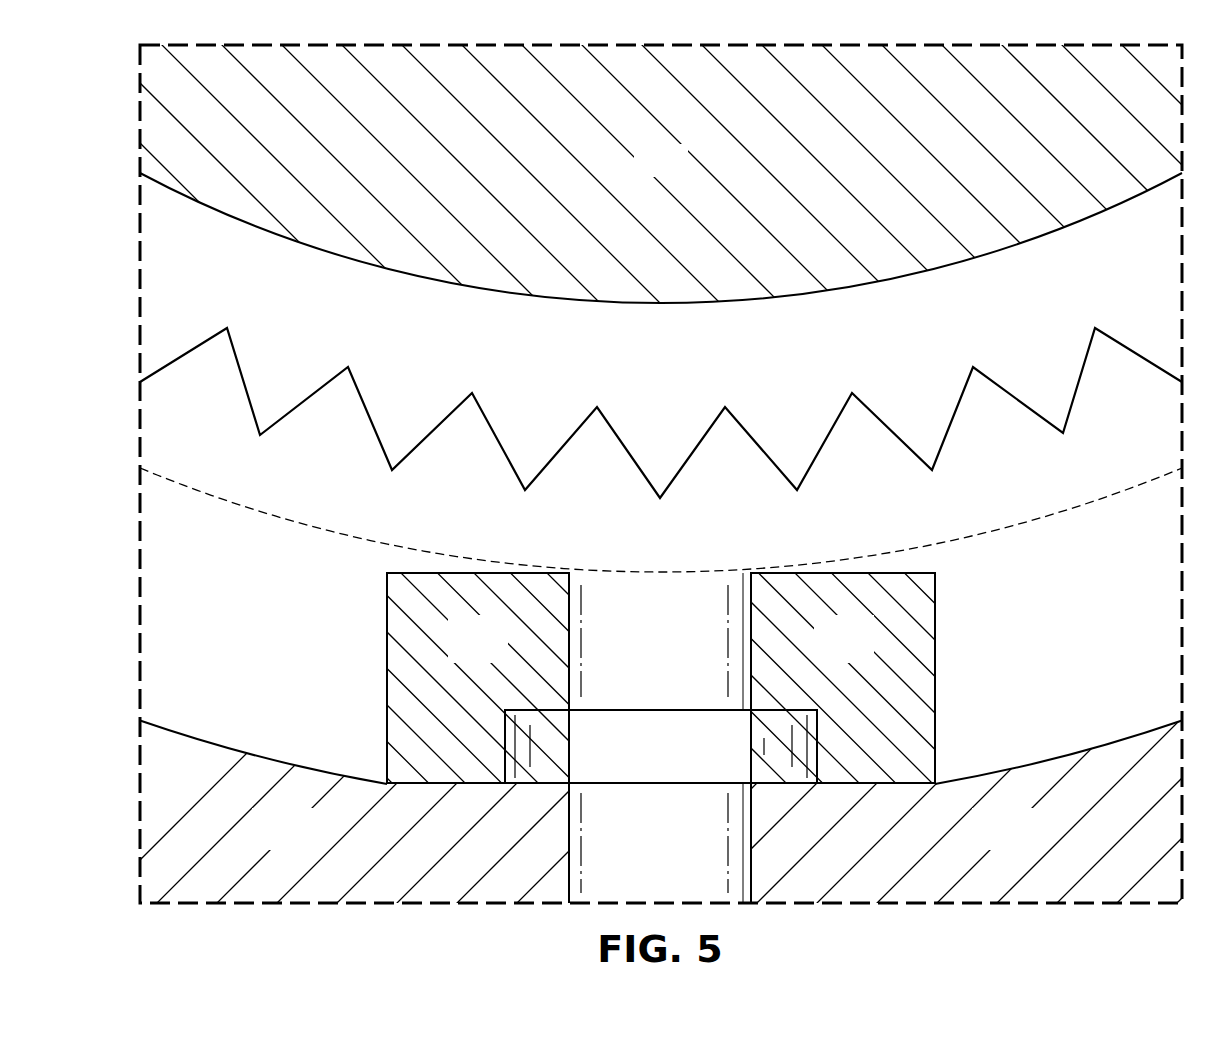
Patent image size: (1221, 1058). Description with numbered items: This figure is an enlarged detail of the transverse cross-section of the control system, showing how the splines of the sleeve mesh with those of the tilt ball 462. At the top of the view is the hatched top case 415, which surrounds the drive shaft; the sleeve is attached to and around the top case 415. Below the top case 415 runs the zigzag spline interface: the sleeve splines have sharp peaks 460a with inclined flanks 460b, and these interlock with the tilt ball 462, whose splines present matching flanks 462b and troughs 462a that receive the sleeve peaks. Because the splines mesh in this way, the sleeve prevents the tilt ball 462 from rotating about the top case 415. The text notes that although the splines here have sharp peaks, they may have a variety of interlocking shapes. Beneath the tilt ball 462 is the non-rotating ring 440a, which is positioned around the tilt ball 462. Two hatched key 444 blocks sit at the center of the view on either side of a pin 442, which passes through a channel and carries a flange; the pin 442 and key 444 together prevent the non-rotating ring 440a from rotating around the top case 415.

The top case 415 is at (639, 174).
The non-rotating ring 440a is at (1038, 844).
The pin 442 is at (640, 658).
The key 444 is at (865, 654).
The sleeve spline peak 460a is at (225, 320).
The sleeve spline flank 460b is at (263, 411).
The tilt ball 462 is at (1075, 690).
The tilt ball spline trough 462a is at (387, 484).
The tilt ball spline flank 462b is at (222, 351).